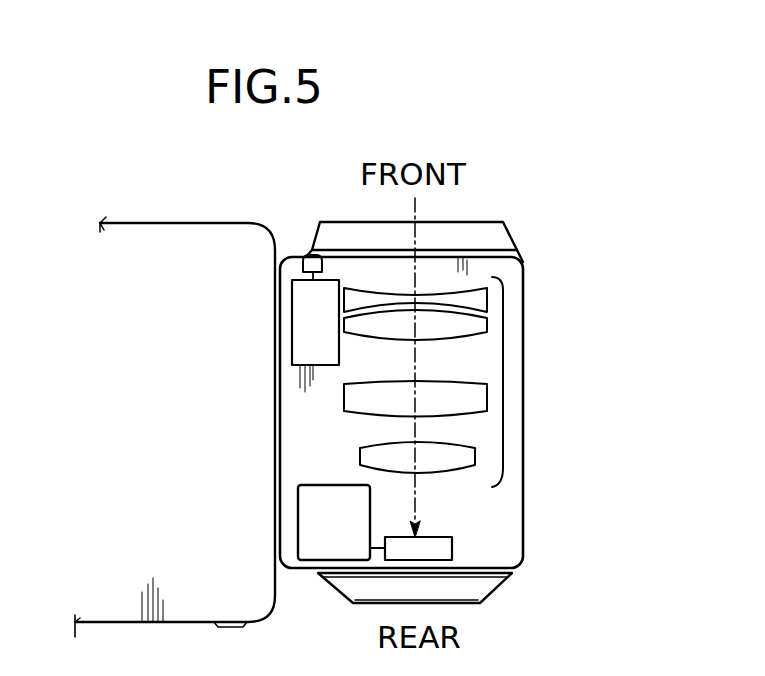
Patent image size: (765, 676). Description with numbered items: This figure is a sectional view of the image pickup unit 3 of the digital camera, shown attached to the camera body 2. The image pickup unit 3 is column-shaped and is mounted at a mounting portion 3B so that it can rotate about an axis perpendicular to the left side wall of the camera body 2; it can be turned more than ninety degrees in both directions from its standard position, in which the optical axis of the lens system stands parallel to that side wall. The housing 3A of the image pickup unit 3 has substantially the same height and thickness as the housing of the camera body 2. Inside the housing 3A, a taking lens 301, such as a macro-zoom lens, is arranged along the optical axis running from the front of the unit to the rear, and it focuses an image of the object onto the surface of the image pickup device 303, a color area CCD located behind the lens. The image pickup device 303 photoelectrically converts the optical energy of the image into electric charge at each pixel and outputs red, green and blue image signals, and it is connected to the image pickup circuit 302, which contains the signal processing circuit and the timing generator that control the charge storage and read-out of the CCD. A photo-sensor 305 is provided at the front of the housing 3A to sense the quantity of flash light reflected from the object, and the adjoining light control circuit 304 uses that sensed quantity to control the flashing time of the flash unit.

The camera body 2 is at (180, 223).
The image pickup unit 3 is at (408, 384).
The housing 3A is at (518, 485).
The mounting portion 3B is at (299, 570).
The taking lens 301 is at (503, 377).
The image pickup circuit 302 is at (322, 498).
The image pickup device 303 is at (452, 548).
The light control circuit 304 is at (302, 340).
The photo-sensor 305 is at (305, 258).